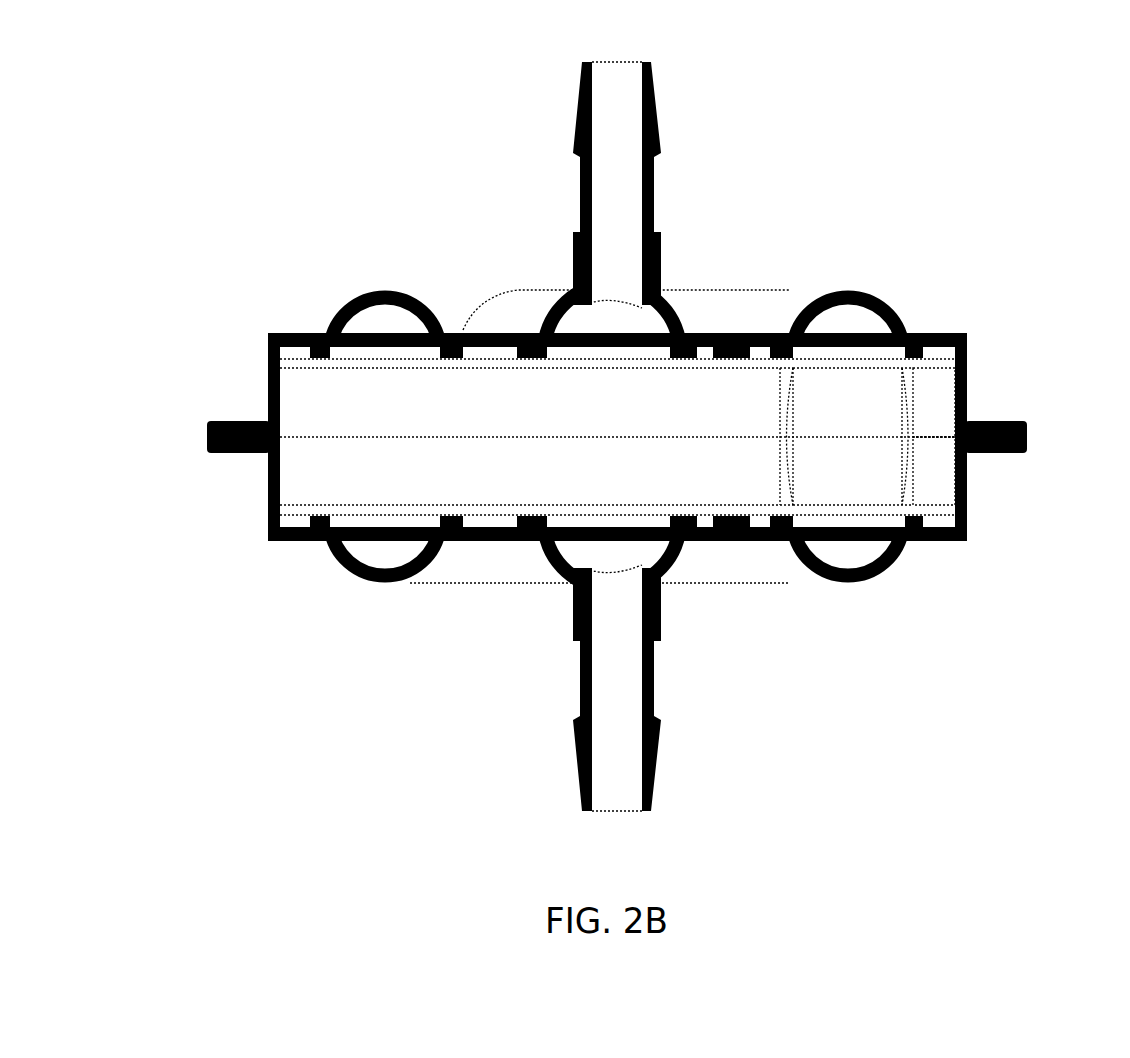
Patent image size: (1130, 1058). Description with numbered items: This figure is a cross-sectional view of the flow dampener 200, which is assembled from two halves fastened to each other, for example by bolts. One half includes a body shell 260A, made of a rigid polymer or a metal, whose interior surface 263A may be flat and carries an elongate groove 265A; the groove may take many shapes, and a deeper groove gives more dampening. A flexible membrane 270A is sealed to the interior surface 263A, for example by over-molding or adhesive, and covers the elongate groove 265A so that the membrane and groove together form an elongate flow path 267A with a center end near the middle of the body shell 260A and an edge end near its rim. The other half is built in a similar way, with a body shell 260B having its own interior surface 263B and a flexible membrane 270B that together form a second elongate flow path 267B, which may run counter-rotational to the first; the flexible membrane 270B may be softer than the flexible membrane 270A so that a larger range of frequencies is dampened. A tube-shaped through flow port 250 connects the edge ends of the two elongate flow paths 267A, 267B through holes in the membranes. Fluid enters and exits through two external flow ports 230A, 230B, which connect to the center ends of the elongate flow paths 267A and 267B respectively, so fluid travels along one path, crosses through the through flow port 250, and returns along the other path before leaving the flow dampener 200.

The flow dampener 200 is at (631, 40).
The external flow port 230A is at (653, 195).
The external flow port 230B is at (655, 745).
The body shell 260A is at (280, 333).
The body shell 260B is at (270, 500).
The elongate groove 265A is at (390, 307).
The interior surface 263A is at (490, 345).
The lower dome chamber 263B is at (350, 557).
The elongate flow path 267A is at (842, 335).
The elongate flow path 267B is at (848, 540).
The flexible membrane 270A is at (932, 368).
The flexible membrane 270B is at (935, 502).
The through flow port 250 is at (900, 440).